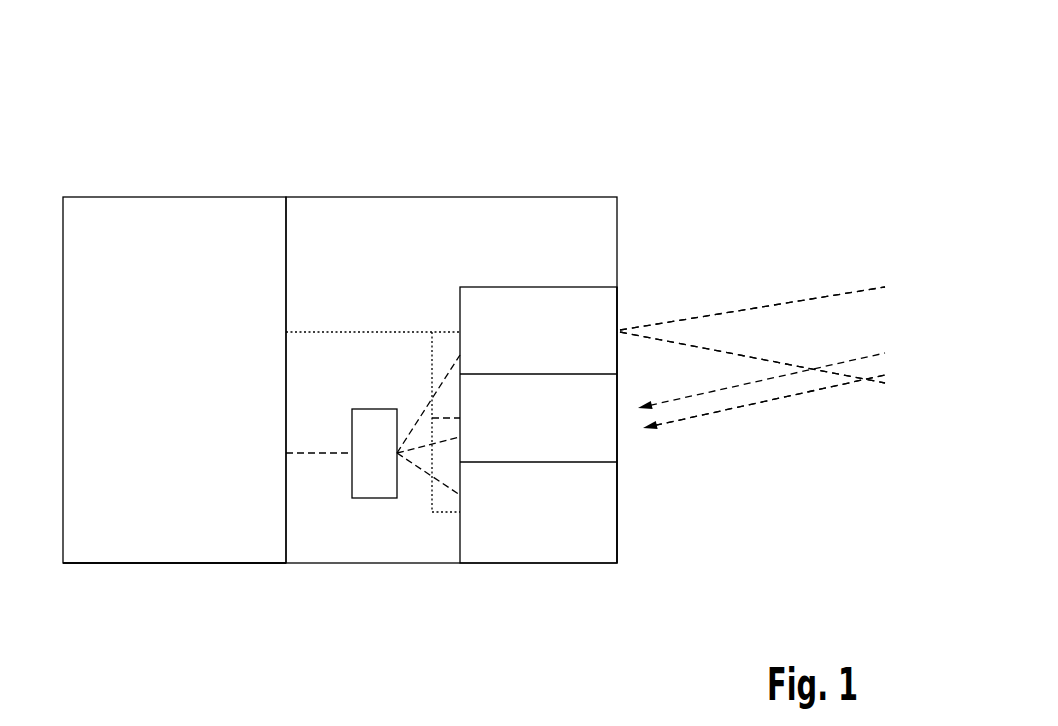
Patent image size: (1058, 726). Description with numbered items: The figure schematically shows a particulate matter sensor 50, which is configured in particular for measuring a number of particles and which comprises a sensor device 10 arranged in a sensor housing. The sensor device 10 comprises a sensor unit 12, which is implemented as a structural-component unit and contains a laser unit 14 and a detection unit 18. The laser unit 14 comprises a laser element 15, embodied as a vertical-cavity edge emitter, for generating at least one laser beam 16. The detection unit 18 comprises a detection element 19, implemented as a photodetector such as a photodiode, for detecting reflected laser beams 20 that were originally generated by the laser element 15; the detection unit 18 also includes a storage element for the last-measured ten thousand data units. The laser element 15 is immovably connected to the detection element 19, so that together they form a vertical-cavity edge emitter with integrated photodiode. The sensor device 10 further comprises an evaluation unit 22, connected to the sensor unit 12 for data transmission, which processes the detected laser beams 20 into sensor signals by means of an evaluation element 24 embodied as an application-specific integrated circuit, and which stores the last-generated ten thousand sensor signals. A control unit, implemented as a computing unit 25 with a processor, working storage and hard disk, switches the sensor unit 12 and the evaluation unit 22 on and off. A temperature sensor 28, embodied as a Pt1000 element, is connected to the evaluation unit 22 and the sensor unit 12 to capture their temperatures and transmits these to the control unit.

The sensor device 10 is at (336, 156).
The particulate matter sensor 50 is at (103, 146).
The sensor unit 12 is at (650, 378).
The laser unit 14 is at (602, 315).
The laser element 15 is at (654, 304).
The laser beam 16 is at (841, 270).
The detection unit 18 is at (603, 443).
The detection element 19 is at (717, 460).
The reflected laser beams 20 is at (797, 414).
The evaluation unit 22 is at (585, 547).
The evaluation element 24 is at (645, 566).
The computing unit 25 is at (190, 547).
The temperature sensor 28 is at (373, 490).